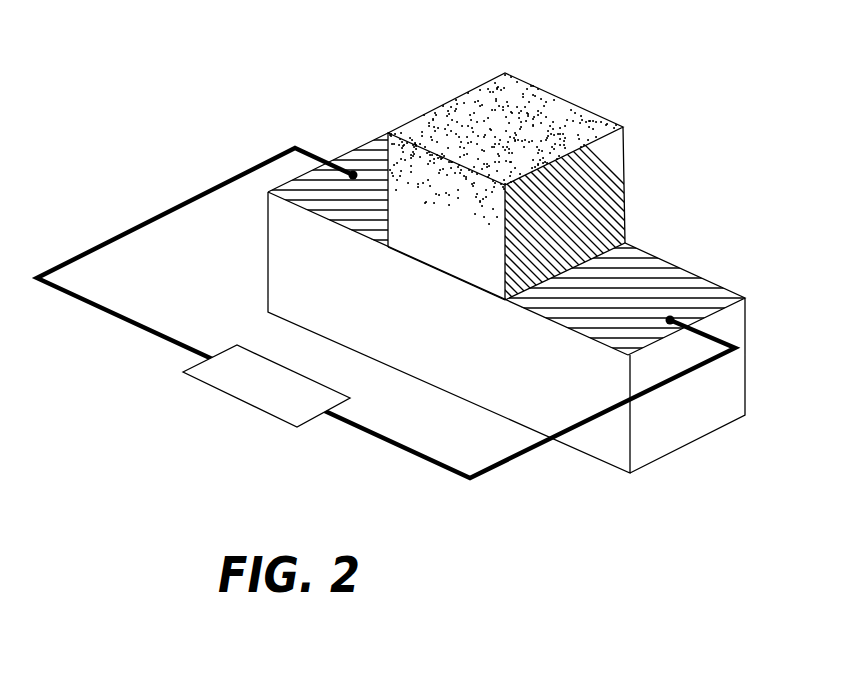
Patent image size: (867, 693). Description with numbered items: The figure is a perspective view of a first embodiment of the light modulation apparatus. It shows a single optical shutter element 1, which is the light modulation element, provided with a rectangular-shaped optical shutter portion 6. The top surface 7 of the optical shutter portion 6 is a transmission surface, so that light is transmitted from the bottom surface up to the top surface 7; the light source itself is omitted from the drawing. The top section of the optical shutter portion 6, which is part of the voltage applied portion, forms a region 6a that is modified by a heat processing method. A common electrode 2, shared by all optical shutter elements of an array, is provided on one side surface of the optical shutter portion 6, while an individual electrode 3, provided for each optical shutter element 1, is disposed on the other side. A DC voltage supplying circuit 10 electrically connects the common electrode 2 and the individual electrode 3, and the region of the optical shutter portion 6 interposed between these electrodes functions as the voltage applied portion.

The optical shutter element 1 is at (613, 447).
The common electrode 2 is at (612, 175).
The individual electrodes 3 is at (353, 170).
The optical shutter portion 6 is at (467, 255).
The modified region 6a is at (432, 170).
The top surface 7 is at (521, 83).
The DC voltage supplying circuit 10 is at (233, 400).